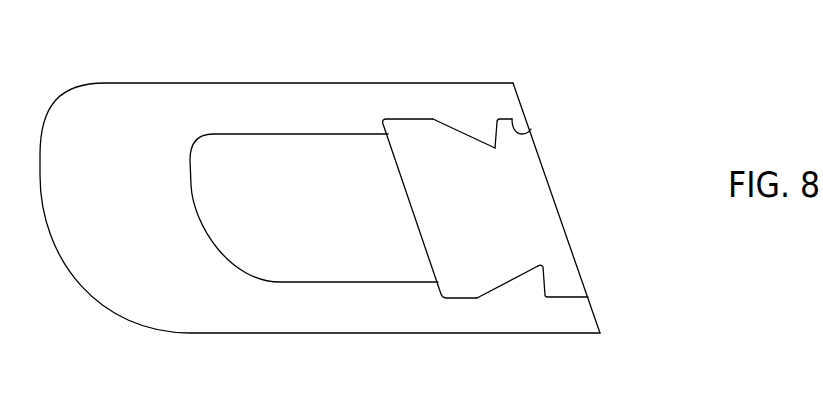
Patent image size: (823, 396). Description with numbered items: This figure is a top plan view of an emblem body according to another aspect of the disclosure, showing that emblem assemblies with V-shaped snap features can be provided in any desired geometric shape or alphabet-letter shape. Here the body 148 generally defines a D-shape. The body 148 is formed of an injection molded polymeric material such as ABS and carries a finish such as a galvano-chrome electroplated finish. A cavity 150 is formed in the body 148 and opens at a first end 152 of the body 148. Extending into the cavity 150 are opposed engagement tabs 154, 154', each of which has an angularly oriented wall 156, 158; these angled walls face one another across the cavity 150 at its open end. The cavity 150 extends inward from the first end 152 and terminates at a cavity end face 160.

The body 148 is at (312, 88).
The cavity 150 is at (531, 130).
The first end 152 is at (593, 310).
The engagement tab 154 is at (486, 92).
The engagement tab 154' is at (538, 326).
The angularly oriented wall 156 is at (452, 131).
The angularly oriented wall 158 is at (507, 283).
The cavity end face 160 is at (422, 223).